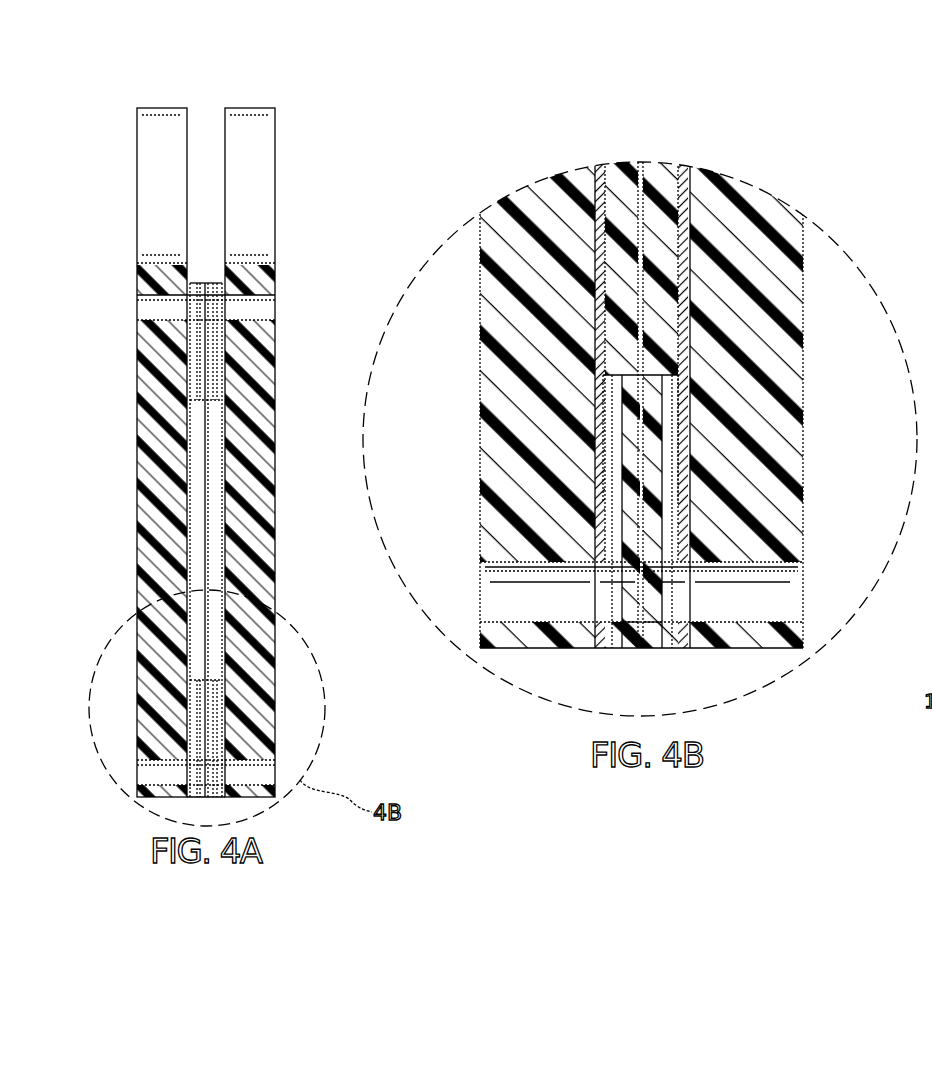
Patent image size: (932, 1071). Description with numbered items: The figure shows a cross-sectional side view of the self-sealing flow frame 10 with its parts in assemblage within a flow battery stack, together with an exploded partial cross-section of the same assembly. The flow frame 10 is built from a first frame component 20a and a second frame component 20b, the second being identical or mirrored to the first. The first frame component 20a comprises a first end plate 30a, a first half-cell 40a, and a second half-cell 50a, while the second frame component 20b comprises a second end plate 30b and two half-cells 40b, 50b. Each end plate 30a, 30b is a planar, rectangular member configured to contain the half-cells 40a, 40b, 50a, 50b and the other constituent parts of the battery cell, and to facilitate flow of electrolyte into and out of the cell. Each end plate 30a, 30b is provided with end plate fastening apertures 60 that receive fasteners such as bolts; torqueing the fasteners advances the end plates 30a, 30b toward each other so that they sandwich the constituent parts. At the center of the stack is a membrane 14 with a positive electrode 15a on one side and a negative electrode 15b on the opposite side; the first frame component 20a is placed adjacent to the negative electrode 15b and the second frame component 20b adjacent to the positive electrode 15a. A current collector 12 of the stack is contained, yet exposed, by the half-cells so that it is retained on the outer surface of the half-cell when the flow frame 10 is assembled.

In FIG. 4B, the self-sealing flow frame 10 is at (840, 290).
In FIG. 4B, the current collector 12 is at (600, 167).
In FIG. 4B, the membrane 14 is at (640, 163).
In FIG. 4B, the positive electrode 15a is at (610, 487).
In FIG. 4B, the negative electrode 15b is at (667, 478).
In FIG. 4B, the first frame component 20a is at (637, 128).
In FIG. 4B, the second frame component 20b is at (802, 128).
In FIG. 4A, the first end plate 30a is at (137, 118).
In FIG. 4B, the first end plate 30a is at (525, 197).
In FIG. 4A, the second end plate 30b is at (267, 107).
In FIG. 4B, the second end plate 30b is at (747, 187).
In FIG. 4B, the first half-cell 40a is at (605, 547).
In FIG. 4B, the half-cell 40b is at (690, 497).
In FIG. 4B, the second half-cell 50a is at (630, 650).
In FIG. 4B, the half-cell 50b is at (653, 650).
In FIG. 4A, the end plate fastening apertures 60 is at (140, 307).